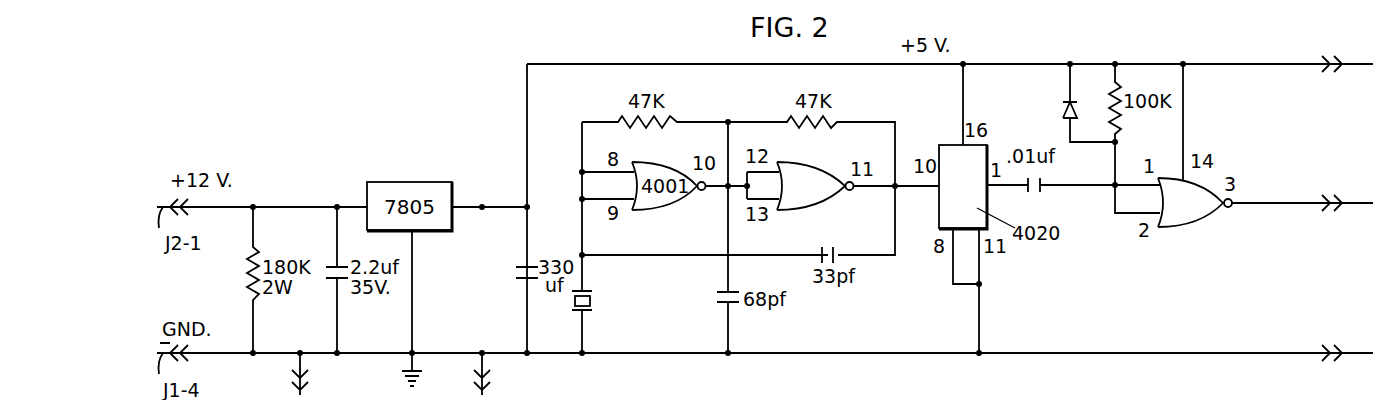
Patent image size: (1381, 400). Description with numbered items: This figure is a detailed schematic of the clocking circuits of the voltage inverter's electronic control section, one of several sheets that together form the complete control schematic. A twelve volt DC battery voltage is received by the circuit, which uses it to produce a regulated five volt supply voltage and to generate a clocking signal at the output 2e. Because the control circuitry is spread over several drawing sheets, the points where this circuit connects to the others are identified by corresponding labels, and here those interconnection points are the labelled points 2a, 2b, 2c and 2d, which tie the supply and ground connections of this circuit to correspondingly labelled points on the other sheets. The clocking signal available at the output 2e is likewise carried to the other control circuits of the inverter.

The interconnection point 2a is at (311, 395).
The interconnection point 2b is at (493, 395).
The interconnection point 2c is at (1362, 353).
The interconnection point 2d is at (1356, 64).
The clocking signal output 2e is at (1356, 203).